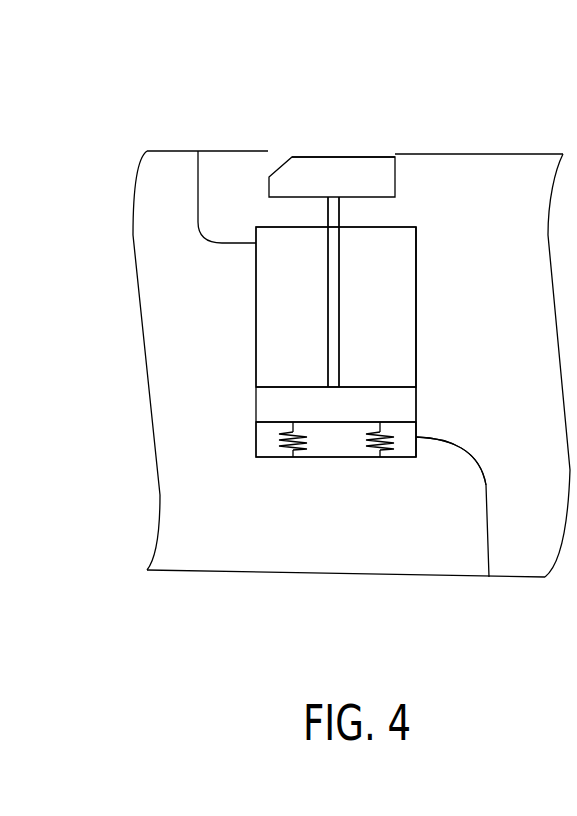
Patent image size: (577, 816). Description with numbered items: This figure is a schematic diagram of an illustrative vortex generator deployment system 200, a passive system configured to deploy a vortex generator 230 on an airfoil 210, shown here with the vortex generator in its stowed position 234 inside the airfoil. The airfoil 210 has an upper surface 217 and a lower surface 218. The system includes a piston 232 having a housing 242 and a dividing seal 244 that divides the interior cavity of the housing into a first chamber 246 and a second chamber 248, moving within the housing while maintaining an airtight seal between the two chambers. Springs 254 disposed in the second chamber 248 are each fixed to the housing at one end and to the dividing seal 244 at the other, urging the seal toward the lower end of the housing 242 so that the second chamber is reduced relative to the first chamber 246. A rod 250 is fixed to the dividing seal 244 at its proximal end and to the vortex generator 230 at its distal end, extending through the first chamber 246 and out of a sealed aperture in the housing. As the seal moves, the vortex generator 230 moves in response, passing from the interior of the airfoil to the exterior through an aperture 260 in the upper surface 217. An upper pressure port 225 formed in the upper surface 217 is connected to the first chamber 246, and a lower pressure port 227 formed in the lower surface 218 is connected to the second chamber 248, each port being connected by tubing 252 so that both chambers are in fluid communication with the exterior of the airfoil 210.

The vortex generator deployment system 200 is at (118, 124).
The airfoil 210 is at (170, 572).
The upper surface 217 is at (248, 143).
The lower surface 218 is at (262, 586).
The upper pressure port 225 is at (198, 151).
The lower pressure port 227 is at (489, 577).
The vortex generator 230 is at (390, 173).
The piston 232 is at (240, 350).
The stowed position 234 is at (430, 213).
The housing 242 is at (417, 302).
The dividing seal 244 is at (405, 413).
The first chamber 246 is at (265, 270).
The second chamber 248 is at (267, 442).
The rod 250 is at (335, 345).
The tubing 252 is at (485, 478).
The springs 254 is at (293, 452).
The aperture 260 is at (385, 157).